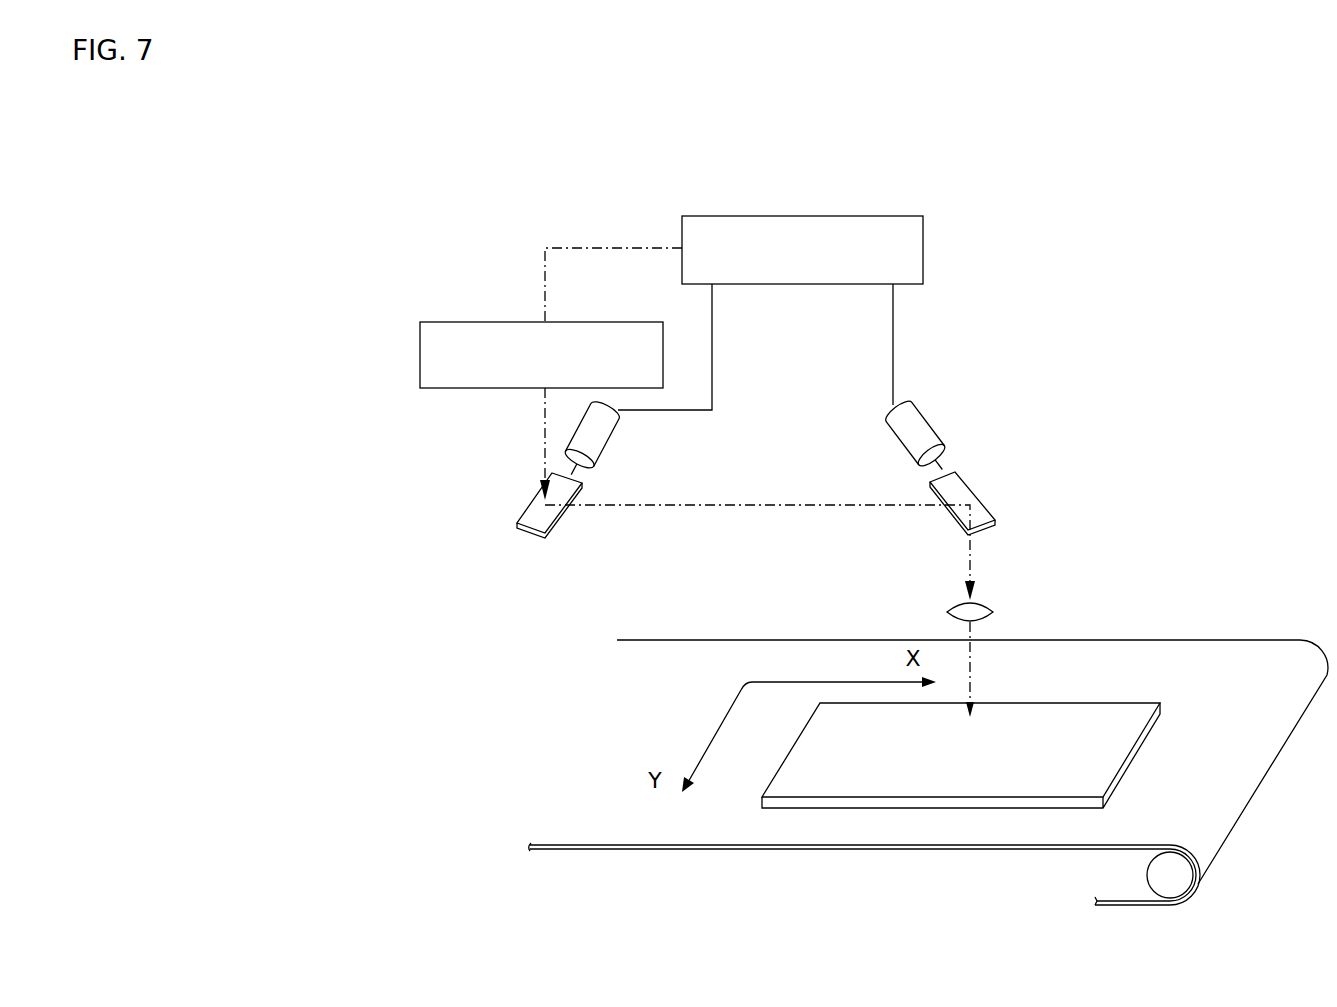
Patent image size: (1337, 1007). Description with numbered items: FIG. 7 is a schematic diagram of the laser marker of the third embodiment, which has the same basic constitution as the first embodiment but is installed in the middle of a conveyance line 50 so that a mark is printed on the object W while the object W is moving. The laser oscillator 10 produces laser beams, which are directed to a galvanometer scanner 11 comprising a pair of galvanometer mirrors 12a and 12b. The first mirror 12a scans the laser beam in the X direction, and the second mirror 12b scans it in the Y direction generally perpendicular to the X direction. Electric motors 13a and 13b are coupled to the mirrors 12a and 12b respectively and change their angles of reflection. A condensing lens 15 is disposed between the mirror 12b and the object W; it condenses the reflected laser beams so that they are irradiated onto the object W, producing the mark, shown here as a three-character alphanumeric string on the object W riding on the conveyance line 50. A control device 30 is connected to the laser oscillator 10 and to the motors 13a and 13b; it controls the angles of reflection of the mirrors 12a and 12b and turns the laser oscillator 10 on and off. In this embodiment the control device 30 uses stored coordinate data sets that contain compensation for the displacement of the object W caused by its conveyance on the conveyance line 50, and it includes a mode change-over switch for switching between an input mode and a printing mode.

The laser oscillator 10 is at (502, 320).
The galvanometer scanner 11 is at (968, 333).
The galvanometer mirror 12a is at (532, 530).
The galvanometer mirror 12b is at (968, 490).
The electric motor 13a is at (615, 440).
The electric motor 13b is at (922, 437).
The condensing lens 15 is at (983, 610).
The control device 30 is at (773, 216).
The conveyance line 50 is at (1193, 652).
The object W is at (1017, 807).